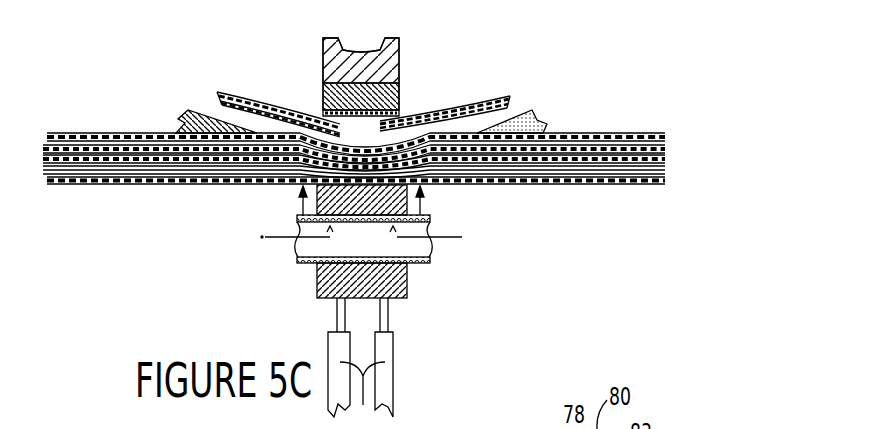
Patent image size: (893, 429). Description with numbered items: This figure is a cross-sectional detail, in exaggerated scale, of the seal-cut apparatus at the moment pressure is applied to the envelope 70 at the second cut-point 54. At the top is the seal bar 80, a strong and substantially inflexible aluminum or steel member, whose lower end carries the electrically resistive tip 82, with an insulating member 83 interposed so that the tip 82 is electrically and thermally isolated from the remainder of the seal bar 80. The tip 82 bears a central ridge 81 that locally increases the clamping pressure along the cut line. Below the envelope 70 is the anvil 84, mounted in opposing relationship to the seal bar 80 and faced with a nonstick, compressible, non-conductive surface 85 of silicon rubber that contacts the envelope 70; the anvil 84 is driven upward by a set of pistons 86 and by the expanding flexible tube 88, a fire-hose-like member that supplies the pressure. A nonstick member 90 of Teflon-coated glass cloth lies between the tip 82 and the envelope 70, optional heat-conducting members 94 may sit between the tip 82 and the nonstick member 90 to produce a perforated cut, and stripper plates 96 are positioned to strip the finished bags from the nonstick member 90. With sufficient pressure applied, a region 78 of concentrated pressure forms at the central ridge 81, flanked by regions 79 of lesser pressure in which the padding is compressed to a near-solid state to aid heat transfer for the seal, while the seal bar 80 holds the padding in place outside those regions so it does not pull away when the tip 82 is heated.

The second cut-point 54 is at (297, 176).
The envelope 70 is at (354, 185).
The region of concentrated pressure 78 is at (382, 67).
The regions of lesser pressure 79 is at (388, 89).
The seal bar 80 is at (392, 60).
The central ridge 81 is at (318, 120).
The tip 82 is at (413, 118).
The insulating member 83 is at (393, 92).
The anvil 84 is at (403, 208).
The nonstick compliant surface 85 is at (407, 190).
The pistons 86 is at (360, 363).
The flexible tube 88 is at (420, 248).
The nonstick member 90 is at (498, 104).
The heat-conducting members 94 is at (497, 100).
The stripper plates 96 is at (187, 114).